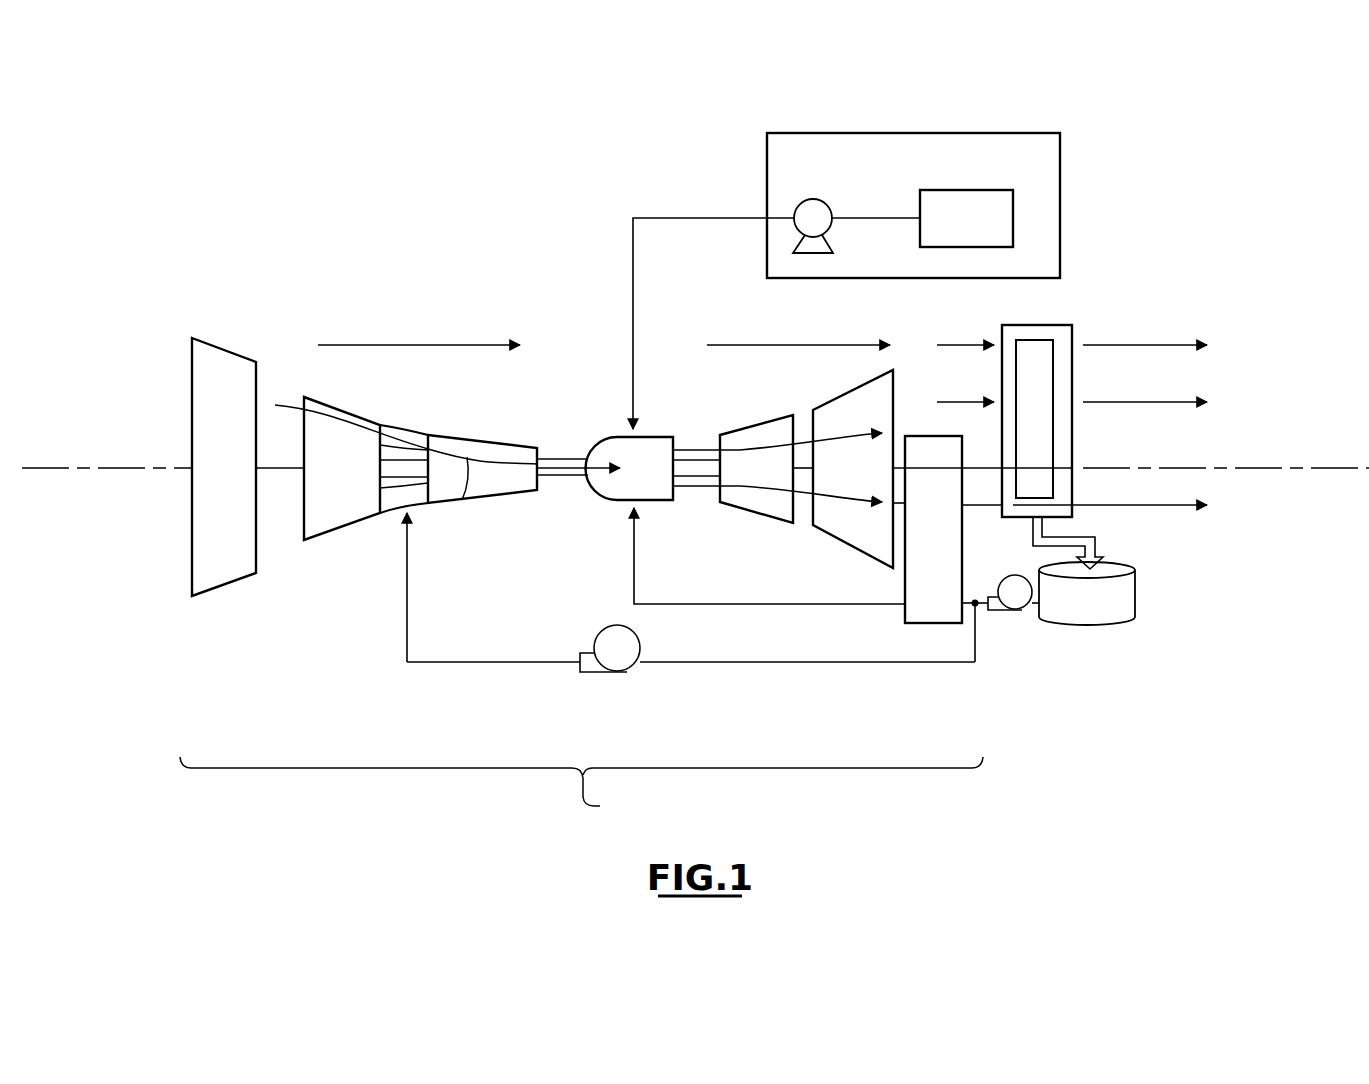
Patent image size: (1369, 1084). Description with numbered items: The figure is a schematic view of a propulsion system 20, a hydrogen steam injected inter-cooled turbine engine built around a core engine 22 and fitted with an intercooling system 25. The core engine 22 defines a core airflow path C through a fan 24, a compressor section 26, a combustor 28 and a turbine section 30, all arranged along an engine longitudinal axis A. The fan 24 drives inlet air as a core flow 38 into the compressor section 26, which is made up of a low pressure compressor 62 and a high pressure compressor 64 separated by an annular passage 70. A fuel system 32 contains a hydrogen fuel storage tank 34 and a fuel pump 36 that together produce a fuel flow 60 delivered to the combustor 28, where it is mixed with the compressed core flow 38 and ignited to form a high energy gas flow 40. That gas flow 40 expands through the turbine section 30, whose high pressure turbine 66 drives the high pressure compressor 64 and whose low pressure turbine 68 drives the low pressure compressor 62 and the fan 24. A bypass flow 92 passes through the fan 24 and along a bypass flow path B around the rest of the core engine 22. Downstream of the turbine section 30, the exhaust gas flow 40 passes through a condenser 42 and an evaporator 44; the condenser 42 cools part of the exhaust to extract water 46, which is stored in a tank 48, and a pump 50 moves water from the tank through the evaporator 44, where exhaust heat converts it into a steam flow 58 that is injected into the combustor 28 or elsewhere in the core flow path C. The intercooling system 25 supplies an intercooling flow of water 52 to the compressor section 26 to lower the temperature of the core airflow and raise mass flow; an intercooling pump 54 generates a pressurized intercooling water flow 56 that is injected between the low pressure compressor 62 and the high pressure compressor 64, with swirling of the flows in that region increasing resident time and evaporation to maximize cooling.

The propulsion system 20 is at (1178, 159).
The core engine 22 is at (581, 791).
The fan 24 is at (192, 561).
The intercooling system 25 is at (417, 440).
The compressor section 26 is at (405, 447).
The combustor 28 is at (605, 452).
The turbine section 30 is at (805, 463).
The fuel system 32 is at (913, 188).
The hydrogen fuel storage tank 34 is at (995, 190).
The fuel pump 36 is at (823, 199).
The core flow 38 is at (462, 500).
The high energy gas flow 40 is at (760, 487).
The condenser 42 is at (1062, 443).
The evaporator 44 is at (912, 580).
The water 46 is at (1092, 540).
The tank 48 is at (1135, 600).
The pump 50 is at (1013, 605).
The intercooling flow of water 52 is at (812, 663).
The intercooling pump 54 is at (618, 655).
The pressurized intercooling water flow 56 is at (407, 592).
The steam flow 58 is at (634, 565).
The fuel flow 60 is at (633, 335).
The low pressure compressor 62 is at (329, 483).
The high pressure compressor 64 is at (478, 483).
The high pressure turbine 66 is at (742, 475).
The low pressure turbine 68 is at (838, 475).
The annular passage 70 is at (389, 525).
The bypass flow 92 is at (753, 345).
The engine longitudinal axis A is at (112, 470).
The bypass flow path B is at (341, 343).
The core airflow path C is at (533, 390).